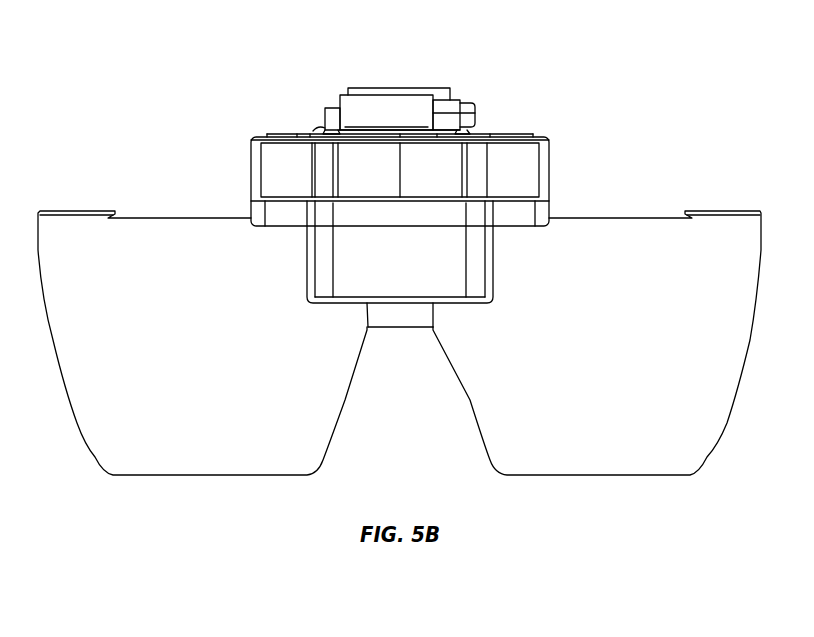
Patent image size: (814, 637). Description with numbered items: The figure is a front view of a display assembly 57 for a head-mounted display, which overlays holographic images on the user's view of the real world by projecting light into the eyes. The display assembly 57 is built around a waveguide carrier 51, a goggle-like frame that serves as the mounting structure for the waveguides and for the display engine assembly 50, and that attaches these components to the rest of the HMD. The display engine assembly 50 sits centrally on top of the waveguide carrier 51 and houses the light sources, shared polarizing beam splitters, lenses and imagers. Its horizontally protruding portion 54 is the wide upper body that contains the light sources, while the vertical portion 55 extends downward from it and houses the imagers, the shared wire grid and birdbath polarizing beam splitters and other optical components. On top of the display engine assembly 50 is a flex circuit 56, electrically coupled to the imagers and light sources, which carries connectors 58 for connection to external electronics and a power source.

The display engine assembly 50 is at (557, 120).
The waveguide carrier 51 is at (325, 447).
The horizontally protruding portion 54 is at (550, 173).
The vertical portion 55 is at (493, 283).
The flex circuit 56 is at (462, 102).
The display assembly 57 is at (246, 66).
The connectors 58 is at (383, 88).